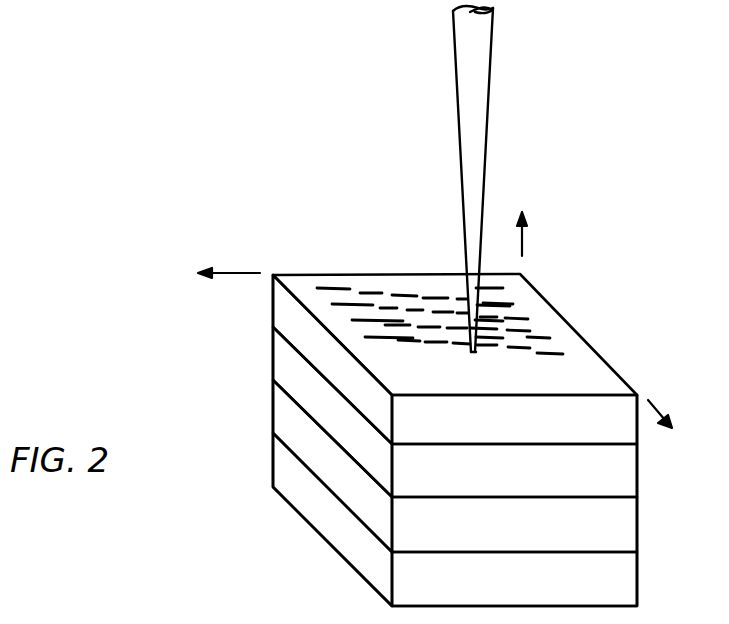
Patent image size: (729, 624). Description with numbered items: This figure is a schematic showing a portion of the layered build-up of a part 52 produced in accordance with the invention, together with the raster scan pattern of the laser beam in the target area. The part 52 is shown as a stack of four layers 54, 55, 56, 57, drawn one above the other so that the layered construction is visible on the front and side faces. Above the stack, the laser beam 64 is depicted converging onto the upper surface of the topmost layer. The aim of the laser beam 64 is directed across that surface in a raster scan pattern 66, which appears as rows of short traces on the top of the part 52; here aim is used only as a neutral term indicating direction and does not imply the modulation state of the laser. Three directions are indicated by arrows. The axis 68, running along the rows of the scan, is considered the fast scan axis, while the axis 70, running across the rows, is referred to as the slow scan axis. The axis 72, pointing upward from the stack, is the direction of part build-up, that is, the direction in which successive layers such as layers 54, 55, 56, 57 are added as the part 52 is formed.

The part 52 is at (365, 580).
The layer 54 is at (519, 588).
The layer 55 is at (519, 533).
The layer 56 is at (519, 480).
The layer 57 is at (519, 427).
The laser beam 64 is at (480, 55).
The raster scan pattern 66 is at (380, 292).
The fast scan axis 68 is at (248, 270).
The slow scan axis 70 is at (652, 400).
The direction of part build-up 72 is at (524, 240).